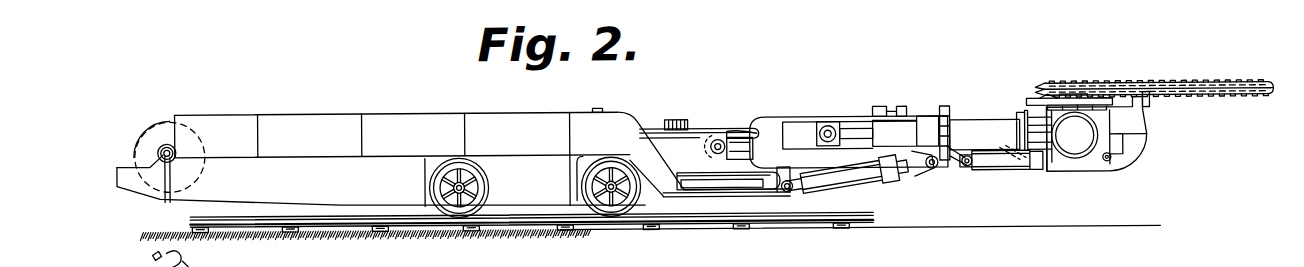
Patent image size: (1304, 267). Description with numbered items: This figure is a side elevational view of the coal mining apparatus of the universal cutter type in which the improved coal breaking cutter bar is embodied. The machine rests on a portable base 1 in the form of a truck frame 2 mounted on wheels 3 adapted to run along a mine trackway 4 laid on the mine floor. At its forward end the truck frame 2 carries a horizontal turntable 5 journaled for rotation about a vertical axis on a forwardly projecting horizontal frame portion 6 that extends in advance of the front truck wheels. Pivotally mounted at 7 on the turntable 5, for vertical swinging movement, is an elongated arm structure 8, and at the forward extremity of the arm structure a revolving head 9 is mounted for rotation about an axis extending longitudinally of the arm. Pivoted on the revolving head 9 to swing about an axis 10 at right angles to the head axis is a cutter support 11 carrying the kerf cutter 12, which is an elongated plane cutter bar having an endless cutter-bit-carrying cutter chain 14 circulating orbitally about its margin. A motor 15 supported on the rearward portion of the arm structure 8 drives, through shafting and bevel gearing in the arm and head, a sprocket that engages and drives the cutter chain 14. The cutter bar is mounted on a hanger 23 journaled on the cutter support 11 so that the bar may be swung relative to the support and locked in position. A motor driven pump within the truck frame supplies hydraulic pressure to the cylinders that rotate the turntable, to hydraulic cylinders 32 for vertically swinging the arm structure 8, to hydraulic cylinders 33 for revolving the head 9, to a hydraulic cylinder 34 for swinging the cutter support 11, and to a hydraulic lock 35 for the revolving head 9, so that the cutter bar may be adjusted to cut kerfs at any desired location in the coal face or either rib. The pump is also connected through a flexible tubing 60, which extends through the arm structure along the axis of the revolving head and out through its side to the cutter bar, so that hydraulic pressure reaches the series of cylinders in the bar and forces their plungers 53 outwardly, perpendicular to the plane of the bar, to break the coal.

The portable base 1 is at (358, 193).
The truck frame 2 is at (520, 189).
The wheels 3 is at (436, 208).
The mine trackway 4 is at (800, 217).
The horizontal turntable 5 is at (662, 138).
The horizontal frame portion 6 is at (728, 195).
The pivot 7 is at (723, 142).
The arm structure 8 is at (826, 124).
The revolving head 9 is at (982, 124).
The axis 10 is at (1076, 139).
The cutter support 11 is at (1110, 127).
The kerf cutter 12 is at (1238, 109).
The cutter chain 14 is at (1145, 96).
The motor 15 is at (688, 121).
The hanger 23 is at (1028, 102).
The hydraulic cylinders 32 is at (870, 183).
The hydraulic cylinders 33 is at (926, 134).
The hydraulic cylinder 34 is at (993, 169).
The hydraulic lock 35 is at (885, 110).
The plunger 53 is at (1173, 86).
The flexible tubing 60 is at (1127, 165).